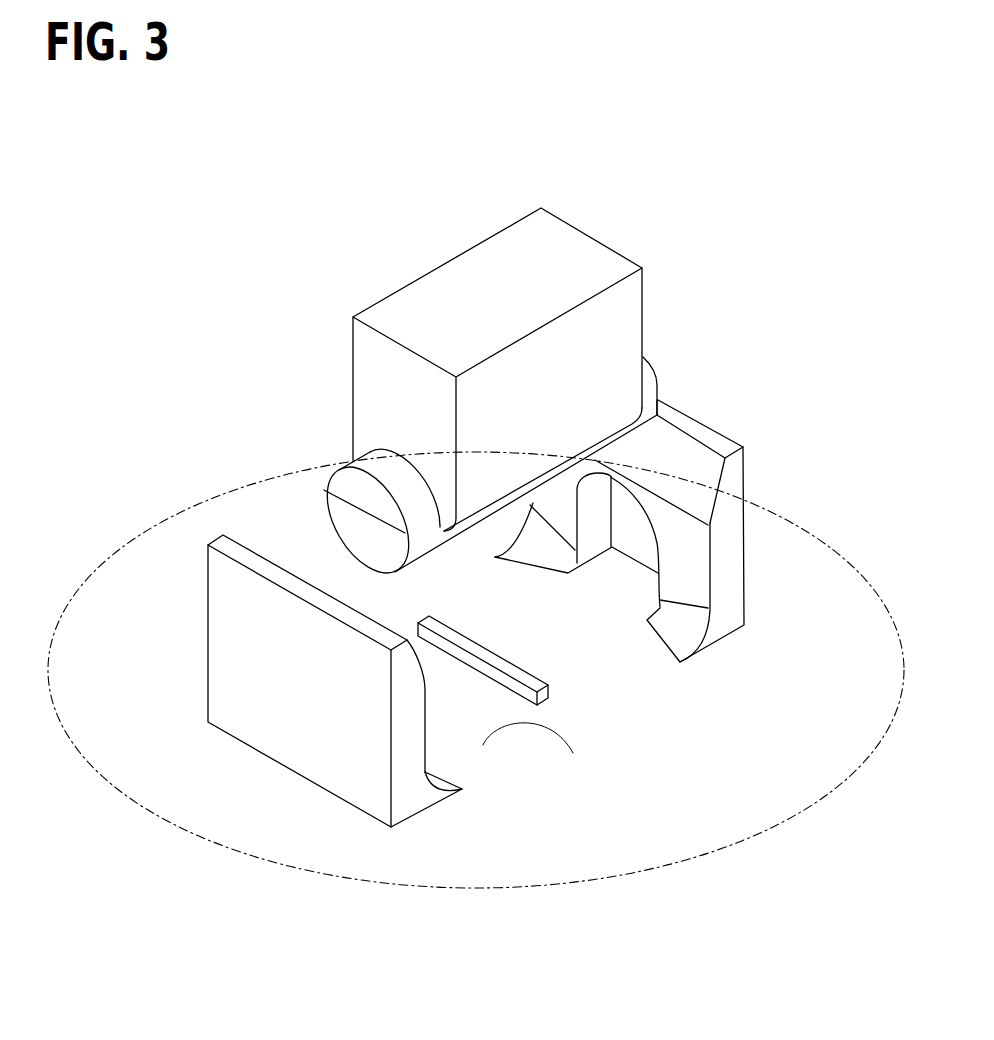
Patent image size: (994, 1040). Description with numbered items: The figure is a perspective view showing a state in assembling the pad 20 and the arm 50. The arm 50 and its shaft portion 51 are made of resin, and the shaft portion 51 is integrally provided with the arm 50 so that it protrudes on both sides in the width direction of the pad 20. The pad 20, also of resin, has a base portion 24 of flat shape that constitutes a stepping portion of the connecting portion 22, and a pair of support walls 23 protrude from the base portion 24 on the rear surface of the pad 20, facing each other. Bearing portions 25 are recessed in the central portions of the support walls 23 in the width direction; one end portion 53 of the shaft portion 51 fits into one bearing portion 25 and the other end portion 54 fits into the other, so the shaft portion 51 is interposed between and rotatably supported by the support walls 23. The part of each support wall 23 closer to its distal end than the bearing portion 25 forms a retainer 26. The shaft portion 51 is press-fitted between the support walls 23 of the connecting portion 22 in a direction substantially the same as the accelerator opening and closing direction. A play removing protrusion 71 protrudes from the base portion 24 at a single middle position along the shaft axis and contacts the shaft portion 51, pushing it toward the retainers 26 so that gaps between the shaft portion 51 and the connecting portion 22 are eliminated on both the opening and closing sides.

The pad 20 is at (140, 565).
The connecting portion 22 is at (474, 613).
The support walls 23 is at (207, 642).
The base portion 24 is at (539, 755).
The bearing portions 25 is at (595, 493).
The retainers 26 is at (643, 470).
The arm 50 is at (352, 373).
The shaft portion 51 is at (370, 462).
The one end portion 53 is at (652, 382).
The other end portion 54 is at (347, 485).
The play removing protrusion 71 is at (535, 680).